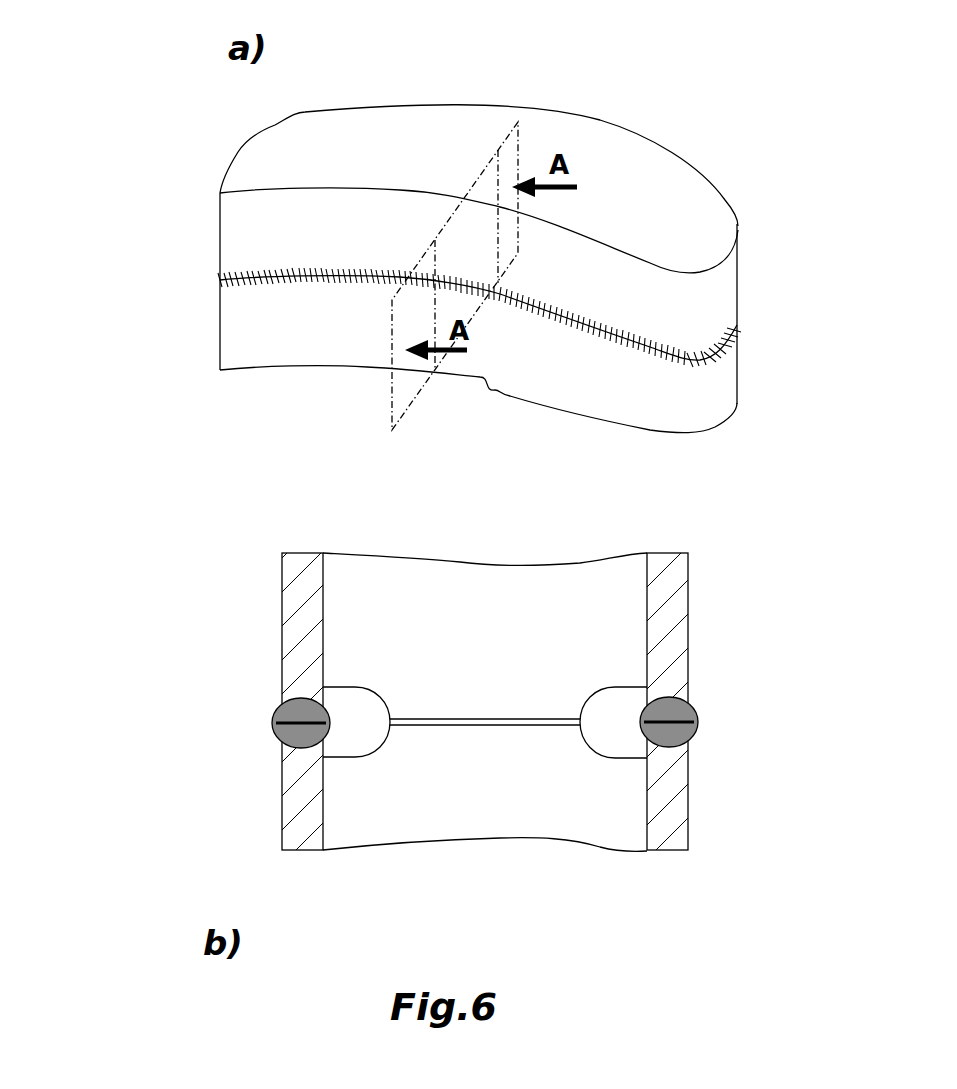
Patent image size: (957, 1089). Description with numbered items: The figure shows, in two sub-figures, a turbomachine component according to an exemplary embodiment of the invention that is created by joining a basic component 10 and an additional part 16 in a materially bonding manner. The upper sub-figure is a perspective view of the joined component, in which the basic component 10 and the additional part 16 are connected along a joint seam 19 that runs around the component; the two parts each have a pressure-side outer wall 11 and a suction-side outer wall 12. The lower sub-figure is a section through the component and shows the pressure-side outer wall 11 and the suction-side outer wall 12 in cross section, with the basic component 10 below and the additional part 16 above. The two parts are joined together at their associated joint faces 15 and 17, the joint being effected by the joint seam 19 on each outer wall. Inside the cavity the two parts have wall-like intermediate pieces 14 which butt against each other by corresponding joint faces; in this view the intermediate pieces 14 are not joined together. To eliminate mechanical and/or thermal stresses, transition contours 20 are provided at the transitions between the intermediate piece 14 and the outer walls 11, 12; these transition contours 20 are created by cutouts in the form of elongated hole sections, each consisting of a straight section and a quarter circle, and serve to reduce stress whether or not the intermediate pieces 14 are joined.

The basic component 10 is at (275, 325).
The pressure-side outer wall 11 is at (317, 339).
The suction-side outer wall 12 is at (672, 305).
The wall-like intermediate piece 14 is at (498, 698).
The joint face 15 is at (292, 740).
The additional part 16 is at (287, 233).
The joint face 17 is at (297, 713).
The joint seam 19 is at (703, 359).
The transition contour 20 is at (362, 735).